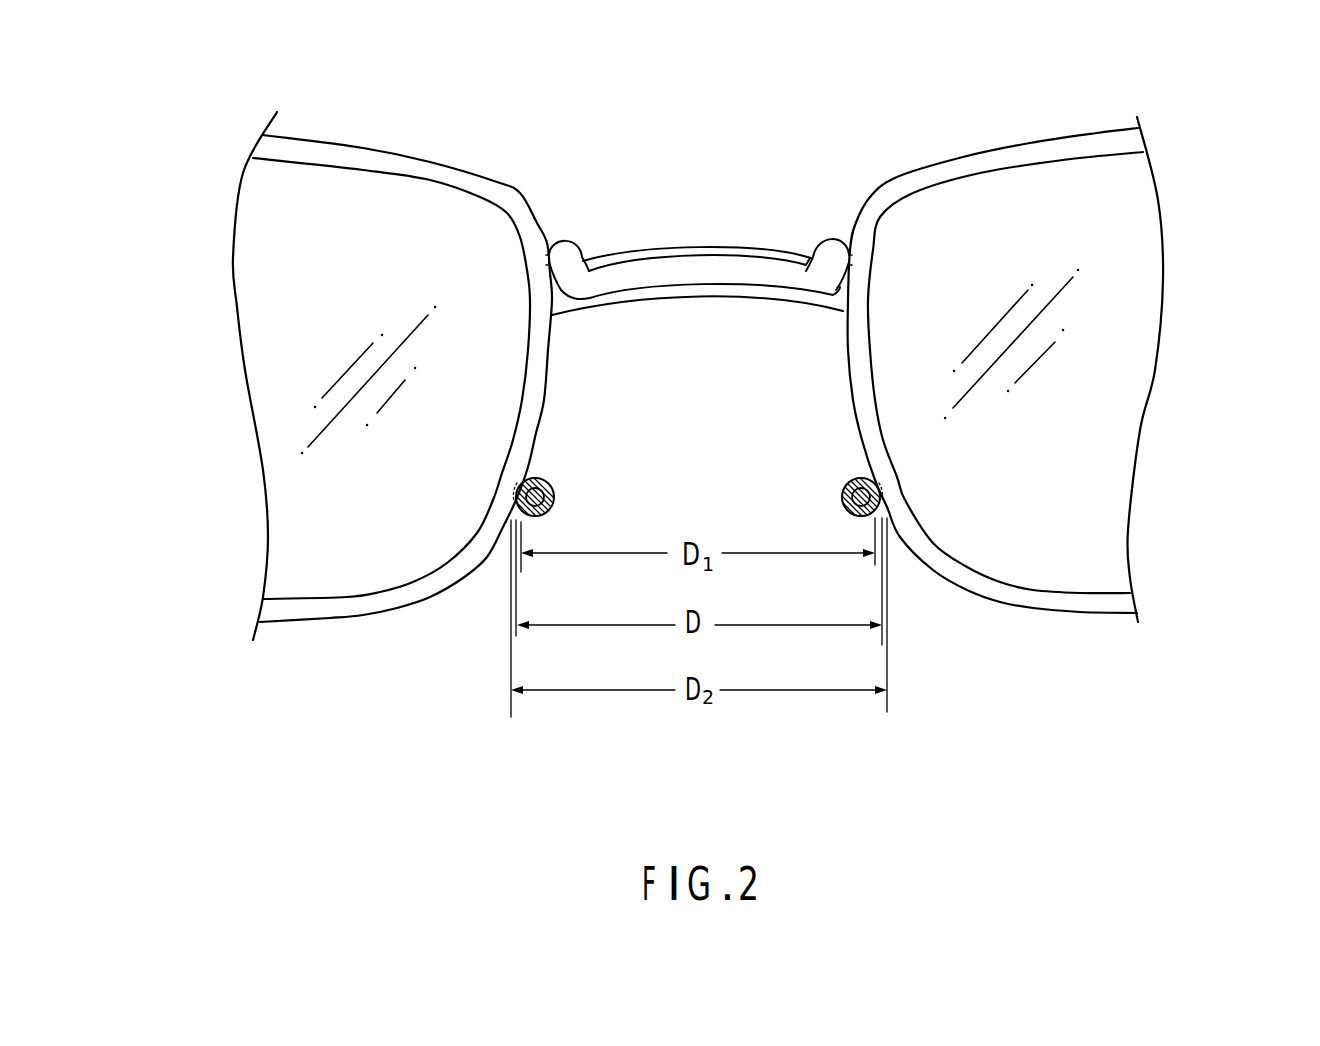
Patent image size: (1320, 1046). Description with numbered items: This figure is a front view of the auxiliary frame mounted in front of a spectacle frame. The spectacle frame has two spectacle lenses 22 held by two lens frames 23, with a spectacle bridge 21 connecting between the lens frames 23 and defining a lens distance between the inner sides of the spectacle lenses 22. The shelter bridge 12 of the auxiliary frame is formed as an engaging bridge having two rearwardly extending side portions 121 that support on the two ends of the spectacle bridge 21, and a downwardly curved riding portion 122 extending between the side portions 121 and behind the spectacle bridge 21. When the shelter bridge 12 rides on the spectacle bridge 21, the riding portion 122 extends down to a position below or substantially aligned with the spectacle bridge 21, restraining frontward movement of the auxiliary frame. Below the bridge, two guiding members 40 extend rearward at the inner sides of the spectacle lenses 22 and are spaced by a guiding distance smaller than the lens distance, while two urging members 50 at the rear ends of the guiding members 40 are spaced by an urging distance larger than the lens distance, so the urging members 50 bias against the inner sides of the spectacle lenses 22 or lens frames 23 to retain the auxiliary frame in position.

The shelter bridge 12 is at (686, 166).
The extending side portion 121 is at (563, 248).
The riding portion 122 is at (706, 262).
The spectacle bridge 21 is at (560, 292).
The spectacle lens 22 is at (292, 377).
The lens frame 23 is at (352, 607).
The guiding member 40 is at (698, 453).
The urging member 50 is at (843, 491).